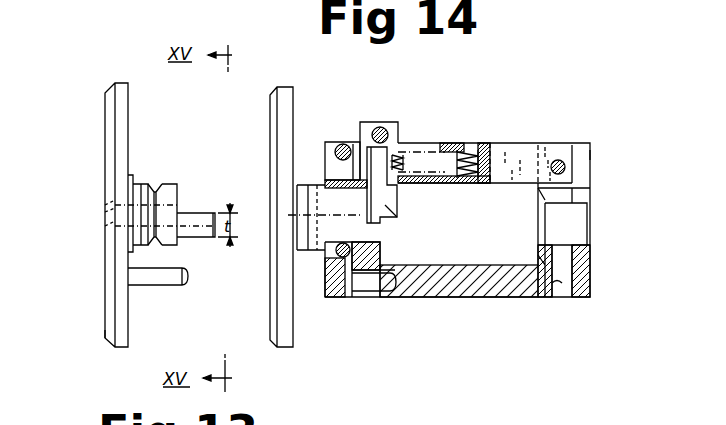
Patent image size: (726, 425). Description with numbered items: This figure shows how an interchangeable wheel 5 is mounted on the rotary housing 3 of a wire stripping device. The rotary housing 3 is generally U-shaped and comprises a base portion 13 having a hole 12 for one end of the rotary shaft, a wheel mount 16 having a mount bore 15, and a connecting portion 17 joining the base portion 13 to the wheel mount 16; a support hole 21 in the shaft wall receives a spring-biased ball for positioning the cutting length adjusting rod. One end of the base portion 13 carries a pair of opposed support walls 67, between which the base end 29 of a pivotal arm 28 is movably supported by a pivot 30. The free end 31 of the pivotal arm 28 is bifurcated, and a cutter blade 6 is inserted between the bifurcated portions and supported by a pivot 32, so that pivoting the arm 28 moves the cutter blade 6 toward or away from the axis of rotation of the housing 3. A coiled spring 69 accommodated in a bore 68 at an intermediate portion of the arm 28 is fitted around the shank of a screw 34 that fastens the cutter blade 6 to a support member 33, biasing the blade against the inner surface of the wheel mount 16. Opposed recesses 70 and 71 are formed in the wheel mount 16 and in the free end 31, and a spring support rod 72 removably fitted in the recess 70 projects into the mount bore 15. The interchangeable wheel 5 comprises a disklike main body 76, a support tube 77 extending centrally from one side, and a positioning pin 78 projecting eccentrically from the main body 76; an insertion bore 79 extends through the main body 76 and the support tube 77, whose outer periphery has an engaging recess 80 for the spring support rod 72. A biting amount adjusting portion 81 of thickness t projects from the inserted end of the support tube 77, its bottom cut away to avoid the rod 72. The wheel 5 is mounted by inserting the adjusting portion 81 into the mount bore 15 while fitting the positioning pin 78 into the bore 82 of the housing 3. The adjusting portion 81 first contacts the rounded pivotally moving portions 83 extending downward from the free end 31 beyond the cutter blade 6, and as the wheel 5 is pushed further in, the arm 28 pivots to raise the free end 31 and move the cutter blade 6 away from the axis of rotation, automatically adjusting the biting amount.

The rotary housing 3 is at (456, 298).
The interchangeable wheel 5 is at (98, 115).
The cutter blade 6 is at (395, 198).
The hole 12 is at (575, 209).
The base portion 13 is at (590, 267).
The mount bore 15 is at (318, 195).
The wheel mount 16 is at (366, 272).
The connecting portion 17 is at (500, 290).
The support hole 21 is at (558, 300).
The pivotal arm 28 is at (523, 159).
The base end 29 is at (550, 150).
The pivot 30 is at (562, 160).
The free end 31 is at (323, 146).
The pivot 32 is at (379, 127).
The support member 33 is at (402, 150).
The screw 34 is at (358, 140).
The support walls 67 is at (594, 156).
The bore 68 is at (470, 146).
The coiled spring 69 is at (458, 146).
The recess 70 is at (337, 260).
The recess 71 is at (338, 146).
The spring support rod 72 is at (322, 272).
The main body 76 is at (104, 326).
The support tube 77 is at (139, 183).
The positioning pin 78 is at (155, 283).
The insertion bore 79 is at (112, 205).
The engaging recess 80 is at (156, 183).
The biting amount adjusting portion 81 is at (195, 212).
The bore 82 is at (384, 287).
The pivotally moving portion 83 is at (397, 213).